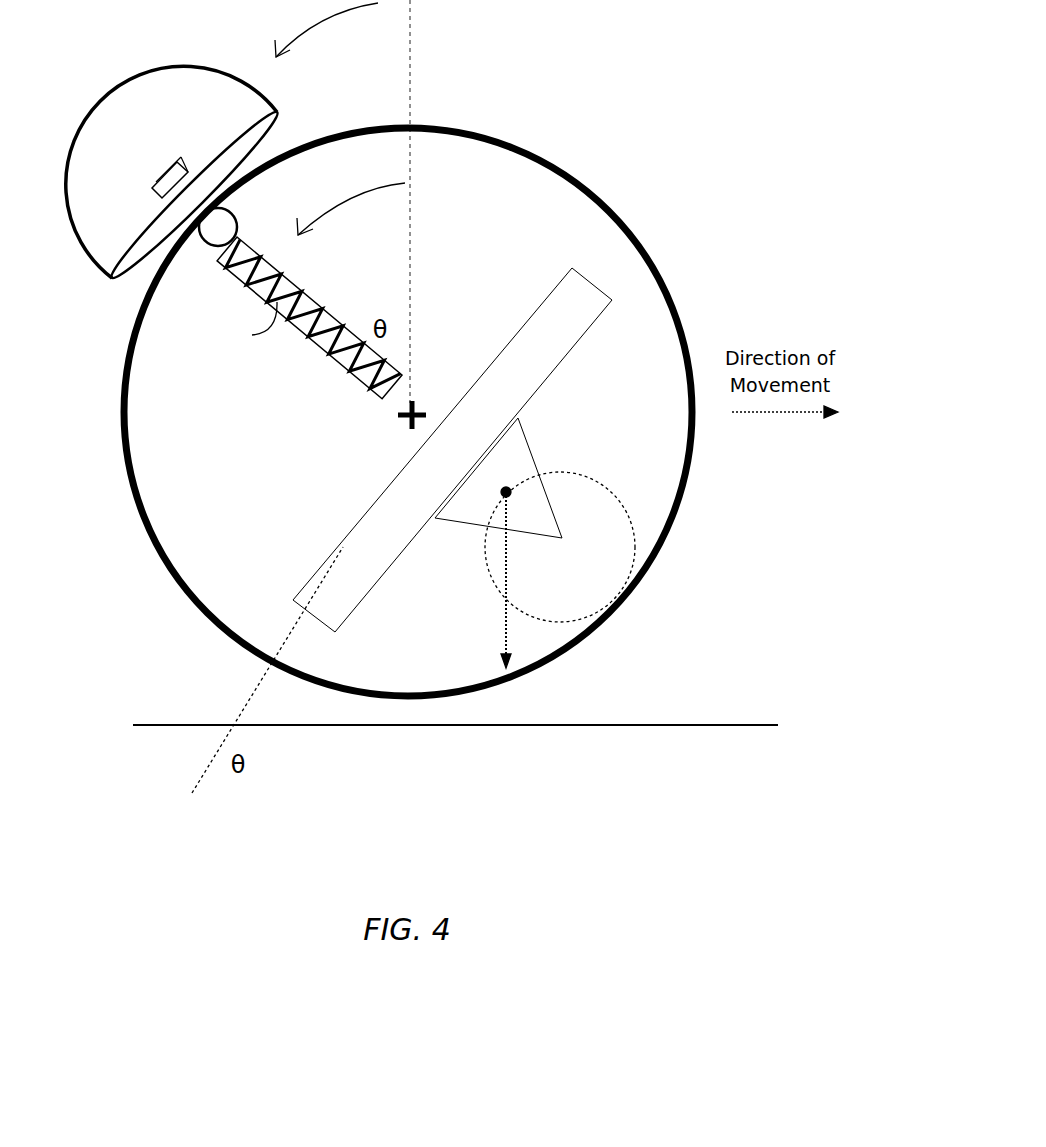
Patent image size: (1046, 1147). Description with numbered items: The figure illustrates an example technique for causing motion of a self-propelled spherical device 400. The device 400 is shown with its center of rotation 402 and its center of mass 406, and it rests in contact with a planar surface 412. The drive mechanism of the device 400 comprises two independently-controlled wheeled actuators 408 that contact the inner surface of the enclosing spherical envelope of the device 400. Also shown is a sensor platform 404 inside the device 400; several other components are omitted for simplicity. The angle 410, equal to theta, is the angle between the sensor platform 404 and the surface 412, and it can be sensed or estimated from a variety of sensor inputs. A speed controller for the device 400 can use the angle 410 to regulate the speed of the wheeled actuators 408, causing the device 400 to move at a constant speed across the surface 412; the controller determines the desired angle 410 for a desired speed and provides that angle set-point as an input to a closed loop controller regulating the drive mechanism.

The self-propelled spherical device 400 is at (466, 102).
The center of rotation 402 is at (410, 388).
The sensor platform 404 is at (510, 396).
The center of mass 406 is at (517, 647).
The wheeled actuators 408 is at (605, 575).
The angle 410 is at (178, 792).
The planar surface 412 is at (642, 733).